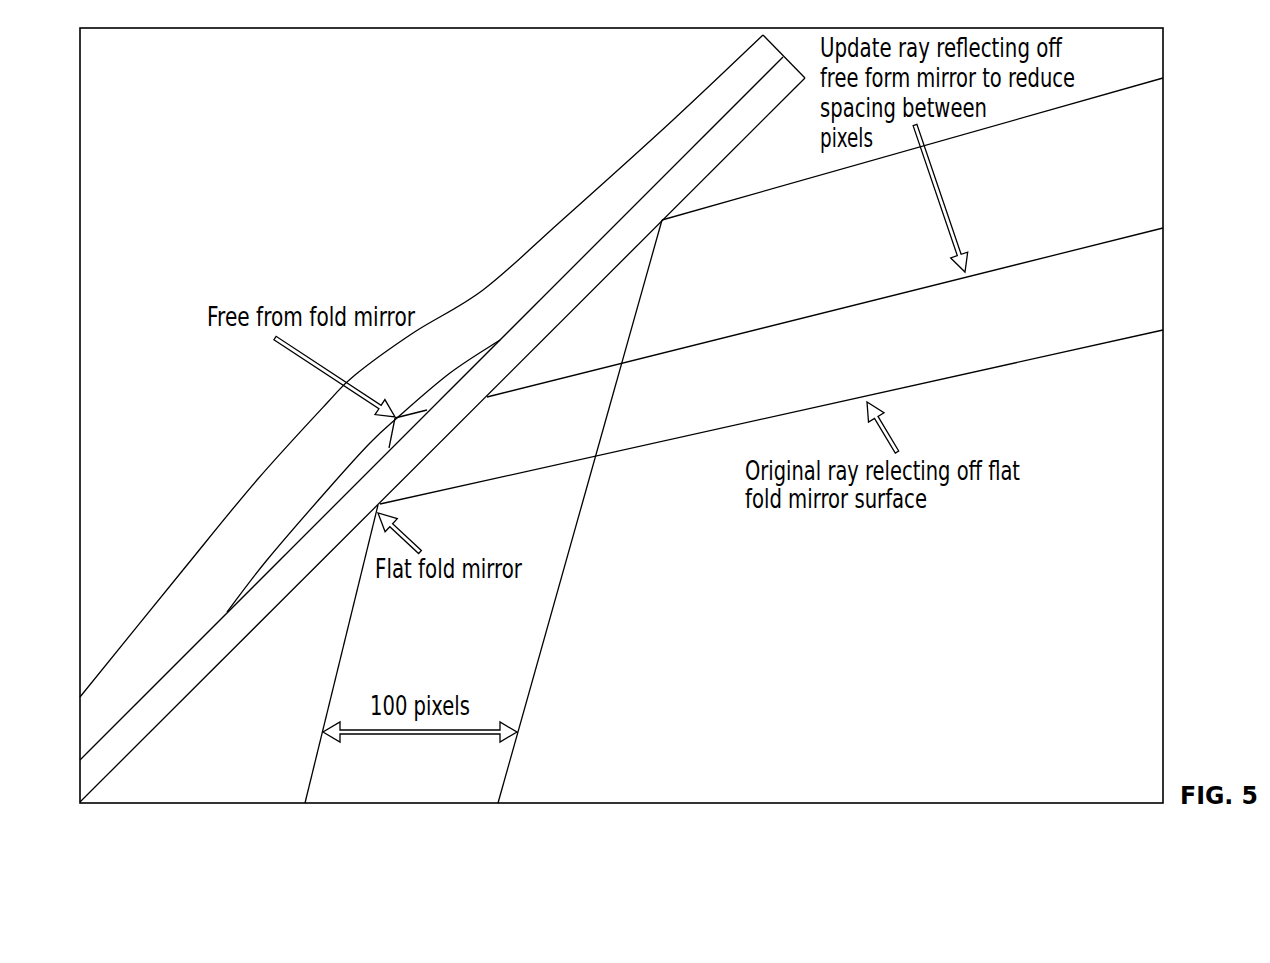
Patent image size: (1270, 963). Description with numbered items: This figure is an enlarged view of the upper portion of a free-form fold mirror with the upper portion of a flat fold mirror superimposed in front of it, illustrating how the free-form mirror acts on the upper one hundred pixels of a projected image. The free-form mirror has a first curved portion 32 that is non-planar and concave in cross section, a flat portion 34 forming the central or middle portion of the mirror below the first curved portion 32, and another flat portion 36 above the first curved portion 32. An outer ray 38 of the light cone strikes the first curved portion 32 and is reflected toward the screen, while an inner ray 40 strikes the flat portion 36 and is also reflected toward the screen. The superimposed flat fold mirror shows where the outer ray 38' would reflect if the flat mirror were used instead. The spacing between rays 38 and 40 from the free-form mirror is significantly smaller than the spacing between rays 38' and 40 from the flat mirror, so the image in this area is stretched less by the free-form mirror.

The first curved portion 32 is at (327, 402).
The flat portion 34 is at (148, 638).
The flat portion 36 is at (672, 120).
The outer ray 38 is at (825, 312).
The outer ray 38' is at (771, 417).
The inner ray 40 is at (1115, 88).